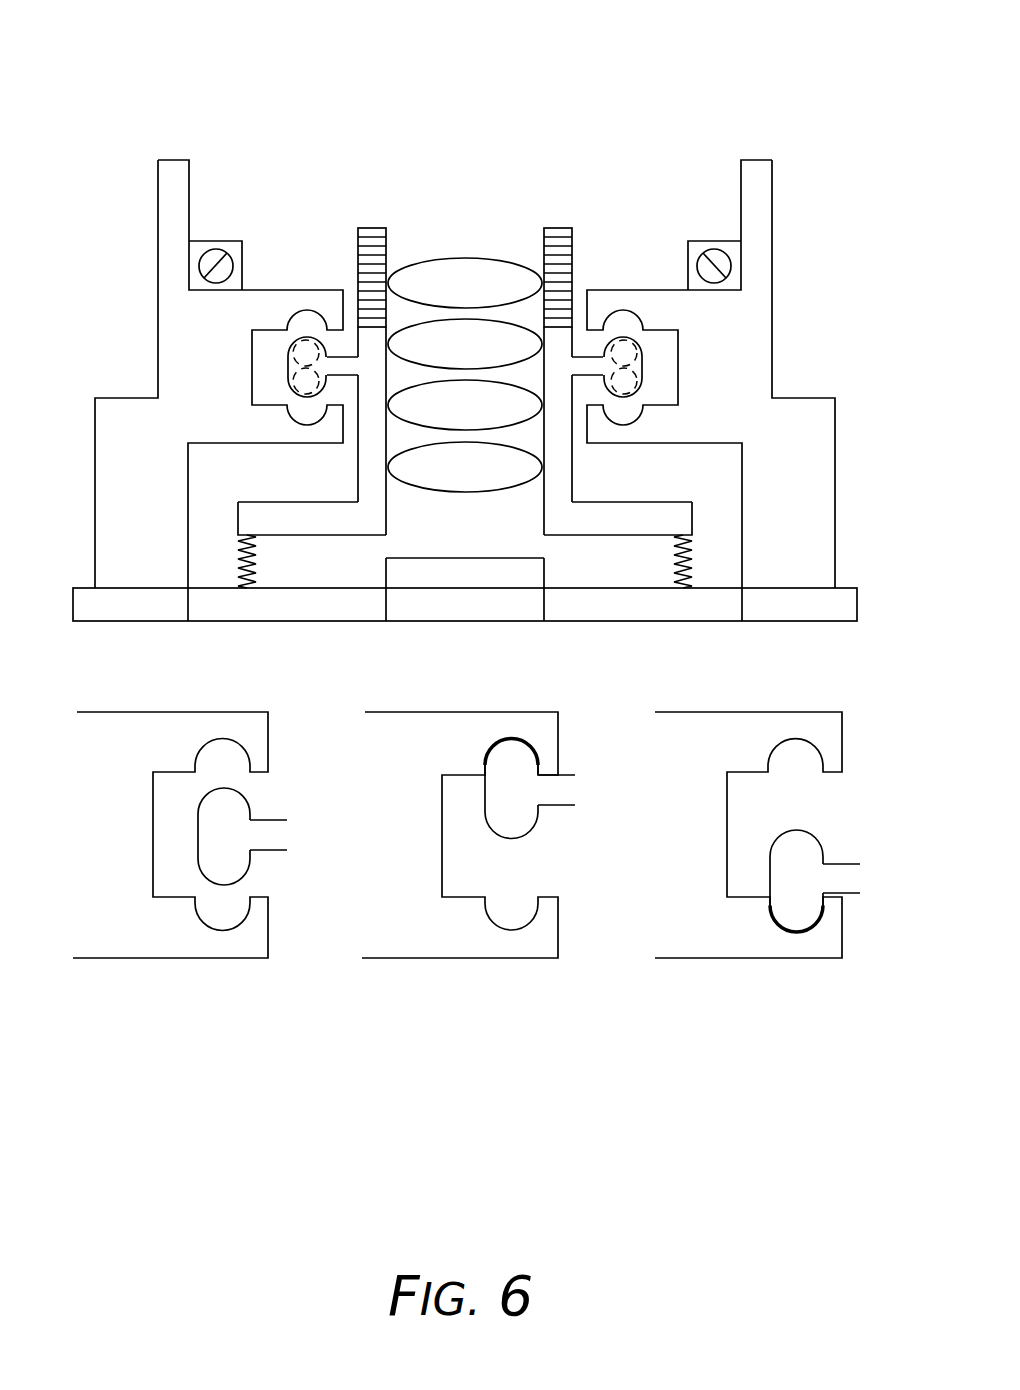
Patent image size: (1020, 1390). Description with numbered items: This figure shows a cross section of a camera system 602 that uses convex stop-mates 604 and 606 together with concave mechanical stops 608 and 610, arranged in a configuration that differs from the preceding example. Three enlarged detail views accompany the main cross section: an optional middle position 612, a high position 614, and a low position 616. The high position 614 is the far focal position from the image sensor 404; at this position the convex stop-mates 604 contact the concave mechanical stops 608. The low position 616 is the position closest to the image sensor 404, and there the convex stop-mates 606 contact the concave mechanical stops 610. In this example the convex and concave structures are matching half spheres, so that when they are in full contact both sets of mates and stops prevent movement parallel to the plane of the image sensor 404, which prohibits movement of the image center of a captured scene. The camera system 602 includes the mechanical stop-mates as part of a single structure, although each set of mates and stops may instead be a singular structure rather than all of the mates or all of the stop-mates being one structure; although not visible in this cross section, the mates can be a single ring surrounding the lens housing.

The camera system 602 is at (753, 80).
The image sensor 404 is at (465, 567).
The convex stop-mate 604 is at (290, 355).
The convex stop-mate 606 is at (290, 393).
The concave mechanical stop 608 is at (627, 332).
The concave mechanical stop 610 is at (627, 413).
The middle position 612 is at (194, 999).
The high position 614 is at (508, 752).
The low position 616 is at (792, 912).